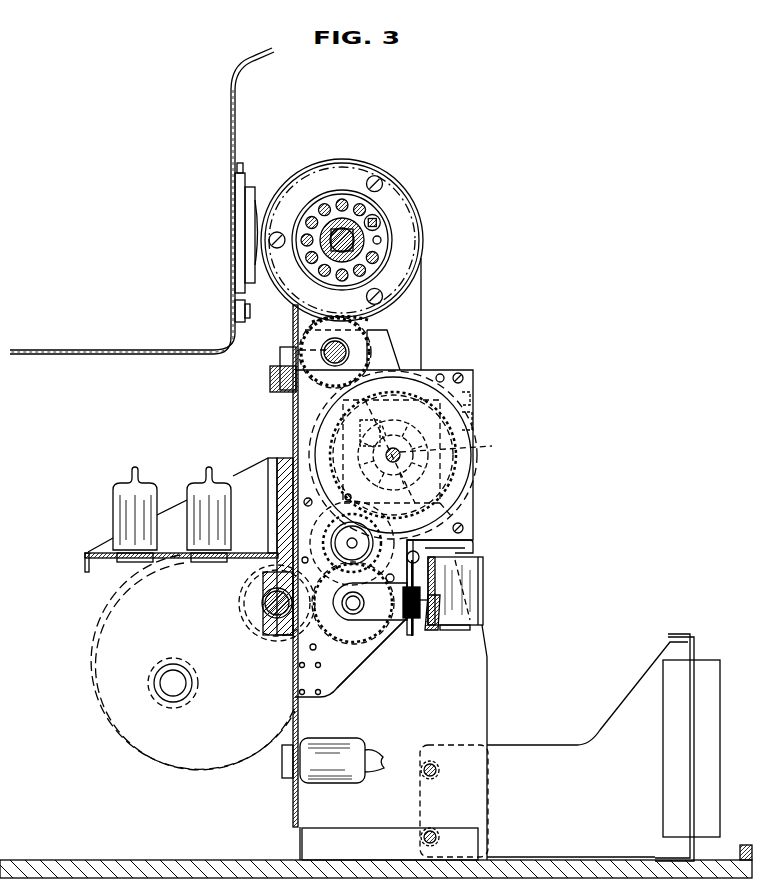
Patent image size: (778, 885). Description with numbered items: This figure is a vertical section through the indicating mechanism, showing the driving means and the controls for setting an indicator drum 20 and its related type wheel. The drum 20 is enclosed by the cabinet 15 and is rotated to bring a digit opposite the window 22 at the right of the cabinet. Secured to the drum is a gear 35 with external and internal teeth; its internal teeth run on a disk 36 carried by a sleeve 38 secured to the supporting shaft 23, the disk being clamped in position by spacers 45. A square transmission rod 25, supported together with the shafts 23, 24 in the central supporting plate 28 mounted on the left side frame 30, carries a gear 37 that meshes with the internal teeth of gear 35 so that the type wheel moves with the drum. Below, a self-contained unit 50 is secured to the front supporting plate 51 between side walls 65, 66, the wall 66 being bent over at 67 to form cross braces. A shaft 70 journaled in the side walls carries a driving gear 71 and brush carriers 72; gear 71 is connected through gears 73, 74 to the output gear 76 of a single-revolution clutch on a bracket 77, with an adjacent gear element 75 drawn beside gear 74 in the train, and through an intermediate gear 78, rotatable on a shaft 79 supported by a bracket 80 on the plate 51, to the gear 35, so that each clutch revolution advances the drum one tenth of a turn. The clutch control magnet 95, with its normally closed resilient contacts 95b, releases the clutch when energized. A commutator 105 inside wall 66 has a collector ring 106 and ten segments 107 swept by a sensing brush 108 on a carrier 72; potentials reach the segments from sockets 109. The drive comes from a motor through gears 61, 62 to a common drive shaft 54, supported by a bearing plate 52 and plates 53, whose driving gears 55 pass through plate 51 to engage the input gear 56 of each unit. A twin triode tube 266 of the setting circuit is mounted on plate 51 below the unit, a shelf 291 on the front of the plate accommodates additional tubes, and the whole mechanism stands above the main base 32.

The cabinet 15 is at (231, 346).
The indicator drum 20 is at (418, 217).
The window 22 is at (228, 237).
The supporting shaft 23 is at (340, 230).
The supporting shaft 24 is at (381, 240).
The transmission rod 25 is at (379, 220).
The central supporting plate 28 is at (421, 293).
The left side frame 30 is at (486, 660).
The main base 32 is at (288, 862).
The gear 35 is at (372, 319).
The disk 36 is at (380, 247).
The gear 37 is at (380, 211).
The sleeve 38 is at (348, 232).
The spacer 45 is at (322, 205).
The unit 50 is at (443, 366).
The front supporting plate 51 is at (292, 726).
The bearing plate 52 is at (283, 640).
The plate 53 is at (262, 630).
The common drive shaft 54 is at (265, 603).
The driving gear 55 is at (243, 586).
The input gear 56 is at (376, 636).
The gear 61 is at (165, 665).
The gear 62 is at (168, 583).
The side wall 65 is at (474, 381).
The side wall 66 is at (345, 682).
The bent-over portion 67 is at (475, 543).
The shaft 70 is at (397, 452).
The driving gear 71 is at (313, 416).
The brush carrier 72 is at (318, 441).
The gear 73 is at (375, 503).
The gear 74 is at (340, 545).
The pinion 75 is at (358, 545).
The output gear 76 is at (352, 630).
The bracket 77 is at (394, 622).
The intermediate gear 78 is at (310, 322).
The shaft 79 is at (325, 350).
The bracket 80 is at (279, 355).
The clutch control magnet 95 is at (482, 587).
The resilient contacts 95b is at (418, 630).
The commutator 105 is at (472, 400).
The collector ring 106 is at (472, 422).
The segments 107 is at (462, 447).
The sensing brush 108 is at (393, 452).
The sockets 109 is at (718, 678).
The twin triode electron tube 266 is at (366, 754).
The shelf 291 is at (84, 555).